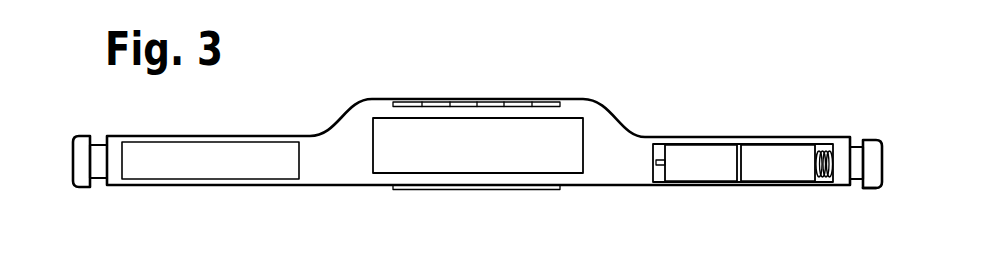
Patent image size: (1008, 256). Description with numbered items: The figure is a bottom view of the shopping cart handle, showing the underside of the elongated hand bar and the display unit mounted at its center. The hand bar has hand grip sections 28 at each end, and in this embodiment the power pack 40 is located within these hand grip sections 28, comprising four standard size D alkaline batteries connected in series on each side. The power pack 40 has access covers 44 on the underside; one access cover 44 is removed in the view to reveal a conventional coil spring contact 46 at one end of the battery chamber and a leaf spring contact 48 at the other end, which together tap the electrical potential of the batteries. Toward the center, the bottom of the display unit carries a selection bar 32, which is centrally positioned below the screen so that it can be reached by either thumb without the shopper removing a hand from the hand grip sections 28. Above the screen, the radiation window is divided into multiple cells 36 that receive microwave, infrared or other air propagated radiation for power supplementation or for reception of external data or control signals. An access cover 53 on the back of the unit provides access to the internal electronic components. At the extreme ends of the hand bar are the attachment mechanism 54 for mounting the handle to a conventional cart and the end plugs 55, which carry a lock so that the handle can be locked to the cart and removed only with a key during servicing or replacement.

The hand grip sections 28 is at (170, 135).
The access covers 44 is at (273, 150).
The cells 36 is at (462, 103).
The access cover 53 is at (570, 133).
The selection bar 32 is at (452, 187).
The leaf spring contact 48 is at (667, 155).
The power pack 40 is at (727, 153).
The coil spring contact 46 is at (823, 150).
The attachment mechanism 54 is at (873, 150).
The end plugs 55 is at (883, 182).